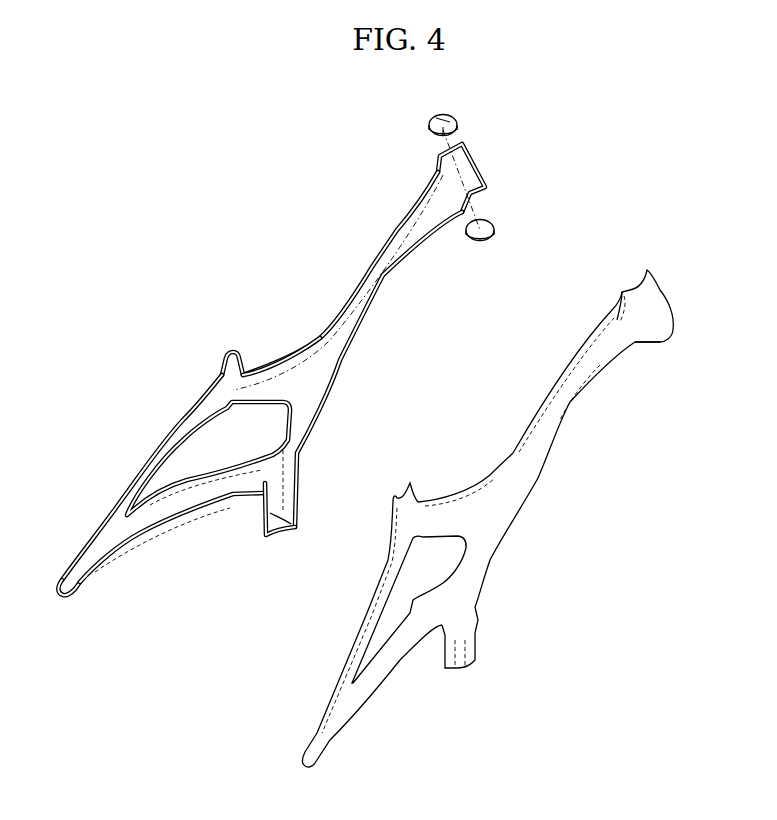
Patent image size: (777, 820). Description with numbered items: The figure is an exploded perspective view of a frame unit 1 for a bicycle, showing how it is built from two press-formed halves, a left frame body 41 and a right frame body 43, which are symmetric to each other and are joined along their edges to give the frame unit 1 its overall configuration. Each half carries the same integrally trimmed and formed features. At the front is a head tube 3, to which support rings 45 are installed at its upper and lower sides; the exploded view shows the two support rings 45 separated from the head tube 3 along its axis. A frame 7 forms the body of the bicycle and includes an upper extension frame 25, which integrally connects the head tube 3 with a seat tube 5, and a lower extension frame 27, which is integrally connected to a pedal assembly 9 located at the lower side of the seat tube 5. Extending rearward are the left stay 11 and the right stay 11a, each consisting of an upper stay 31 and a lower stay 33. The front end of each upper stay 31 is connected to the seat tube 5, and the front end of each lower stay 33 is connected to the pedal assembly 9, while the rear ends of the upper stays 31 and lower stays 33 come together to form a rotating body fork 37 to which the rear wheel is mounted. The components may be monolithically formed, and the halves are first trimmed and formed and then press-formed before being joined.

The frame unit 1 is at (227, 241).
The head tube 3 is at (478, 167).
The seat tube 5 is at (228, 356).
The frame 7 is at (373, 260).
The pedal assembly 9 is at (267, 538).
The left stay 11 is at (137, 461).
The right stay 11a is at (343, 648).
The upper extension frame 25 is at (268, 367).
The lower extension frame 27 is at (337, 375).
The upper stay 31 is at (165, 432).
The lower stay 33 is at (127, 552).
The rotating body fork 37 is at (68, 572).
The left frame body 41 is at (318, 321).
The right frame body 43 is at (543, 523).
The support ring 45 is at (455, 122).